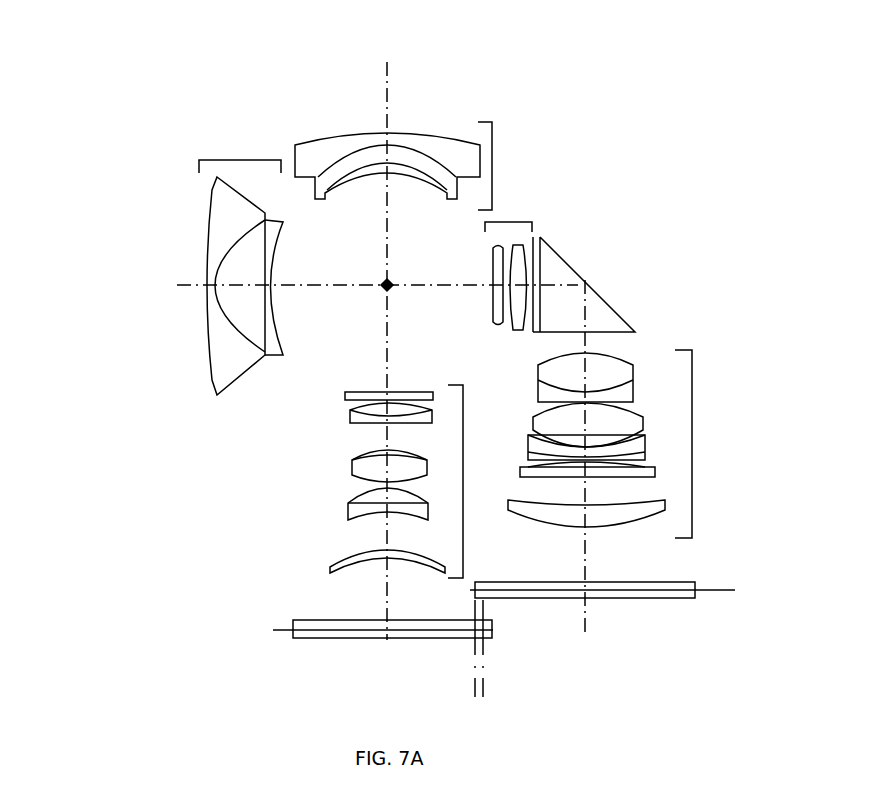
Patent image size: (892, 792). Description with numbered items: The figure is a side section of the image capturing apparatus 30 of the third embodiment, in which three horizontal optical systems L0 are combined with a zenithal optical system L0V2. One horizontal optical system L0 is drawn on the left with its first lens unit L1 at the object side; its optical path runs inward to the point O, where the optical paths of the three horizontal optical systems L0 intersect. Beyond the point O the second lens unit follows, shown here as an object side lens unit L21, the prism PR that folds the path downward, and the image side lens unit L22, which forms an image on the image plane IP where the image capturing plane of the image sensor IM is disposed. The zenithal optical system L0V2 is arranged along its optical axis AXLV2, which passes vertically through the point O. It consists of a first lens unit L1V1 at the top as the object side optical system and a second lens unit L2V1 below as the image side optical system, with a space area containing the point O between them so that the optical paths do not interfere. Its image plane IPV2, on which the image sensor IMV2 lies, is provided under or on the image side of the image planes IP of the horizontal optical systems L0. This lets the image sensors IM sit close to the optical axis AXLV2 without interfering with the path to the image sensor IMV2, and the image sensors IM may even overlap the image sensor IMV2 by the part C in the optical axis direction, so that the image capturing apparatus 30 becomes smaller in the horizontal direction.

The image capturing apparatus 30 is at (208, 88).
The optical axis AXLV2 is at (431, 25).
The point O is at (381, 446).
The optical system L0 is at (187, 262).
The first lens unit L1 is at (240, 155).
The zenithal optical system L0V2 is at (418, 128).
The first lens unit L1V1 is at (516, 166).
The first sub-unit of second lens unit L21 is at (535, 222).
The prism PR is at (593, 305).
The image side lens unit L22 is at (621, 444).
The second lens unit L2V1 is at (422, 481).
The image sensor IMV2 is at (368, 638).
The image plane IPV2 is at (290, 630).
The image sensor IM is at (670, 598).
The image plane IP is at (720, 592).
The part C is at (435, 658).